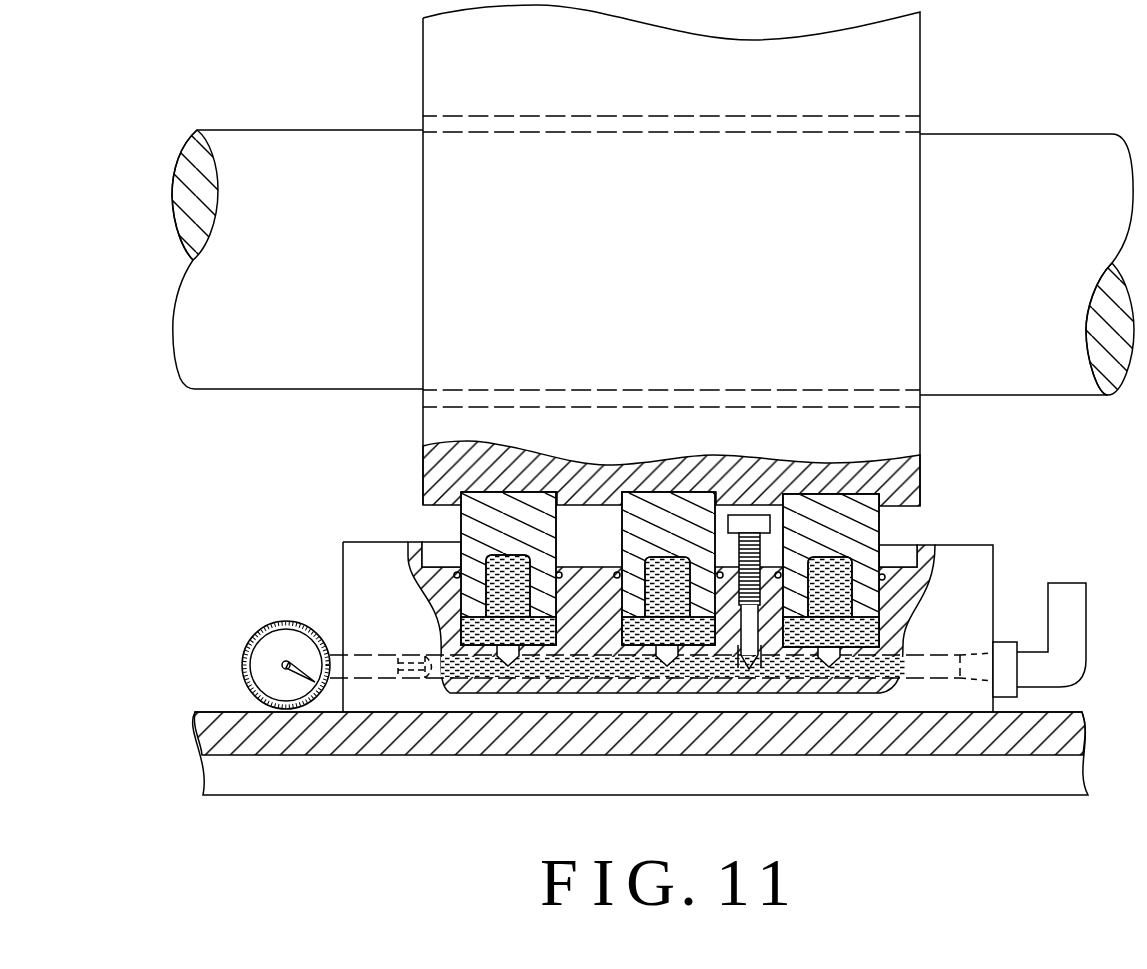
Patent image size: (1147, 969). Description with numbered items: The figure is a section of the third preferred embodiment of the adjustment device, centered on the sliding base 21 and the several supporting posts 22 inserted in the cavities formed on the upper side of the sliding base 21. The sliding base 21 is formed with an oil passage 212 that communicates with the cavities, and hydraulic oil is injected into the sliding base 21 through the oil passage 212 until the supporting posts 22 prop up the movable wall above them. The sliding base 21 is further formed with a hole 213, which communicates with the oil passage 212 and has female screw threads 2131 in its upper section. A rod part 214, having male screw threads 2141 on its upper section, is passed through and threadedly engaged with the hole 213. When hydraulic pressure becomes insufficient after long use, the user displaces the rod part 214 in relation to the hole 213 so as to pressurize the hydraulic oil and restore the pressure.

The sliding base 21 is at (352, 568).
The supporting posts 22 is at (490, 515).
The oil passage 212 is at (922, 677).
The hole 213 is at (745, 647).
The female screw threads 2131 is at (757, 650).
The rod part 214 is at (767, 523).
The male screw threads 2141 is at (790, 555).